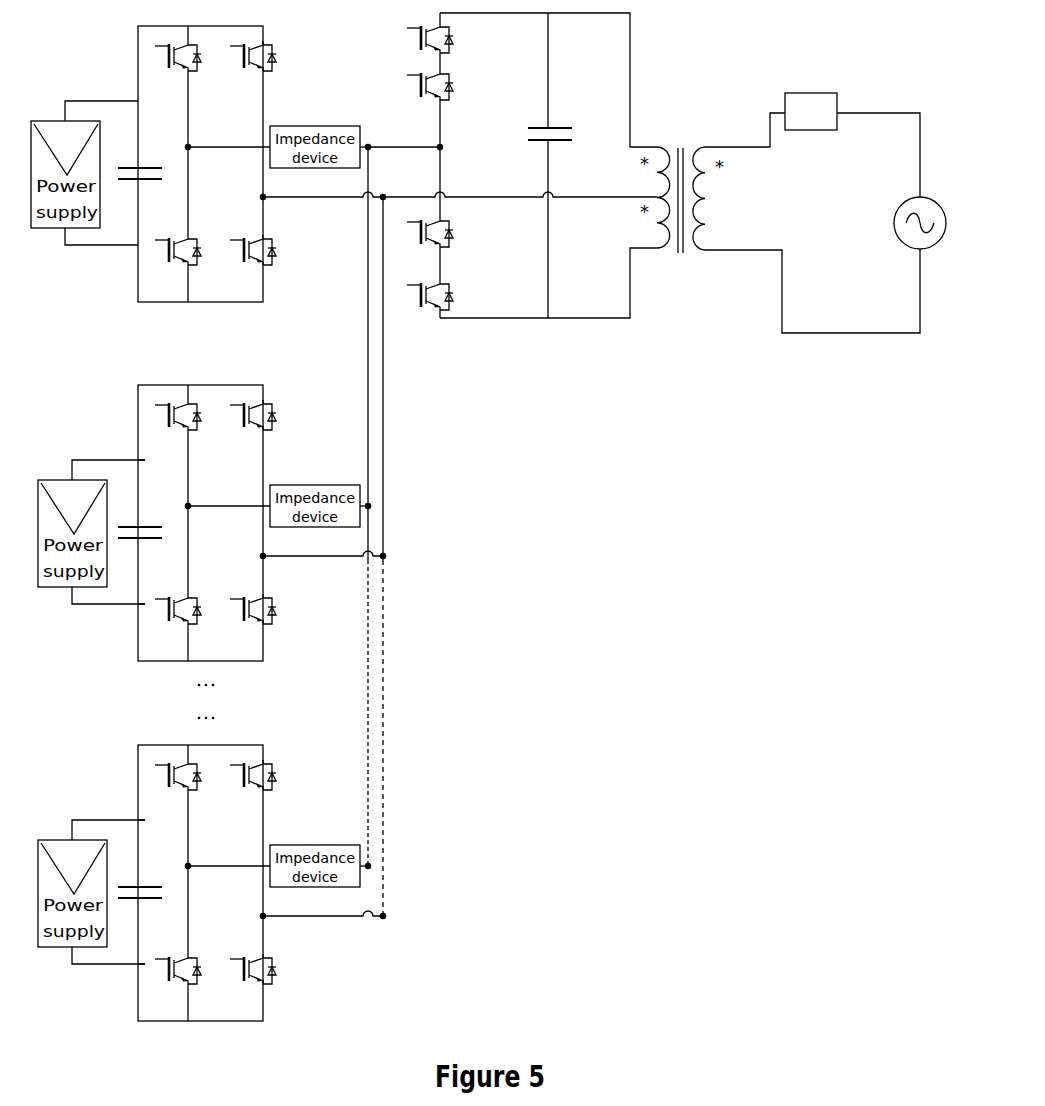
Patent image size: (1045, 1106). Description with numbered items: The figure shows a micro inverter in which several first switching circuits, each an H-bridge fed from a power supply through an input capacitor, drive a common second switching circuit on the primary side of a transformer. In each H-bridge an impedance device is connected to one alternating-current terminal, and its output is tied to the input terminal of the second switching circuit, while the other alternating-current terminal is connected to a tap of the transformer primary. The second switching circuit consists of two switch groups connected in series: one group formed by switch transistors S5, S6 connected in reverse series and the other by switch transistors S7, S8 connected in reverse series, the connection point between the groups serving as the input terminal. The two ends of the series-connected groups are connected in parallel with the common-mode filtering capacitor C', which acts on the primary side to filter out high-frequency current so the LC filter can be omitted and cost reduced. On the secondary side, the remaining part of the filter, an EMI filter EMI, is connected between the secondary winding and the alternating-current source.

The switch transistor S5 is at (442, 39).
The switch transistor S6 is at (442, 85).
The switch transistor S7 is at (442, 232).
The switch transistor S8 is at (442, 295).
The filtering capacitor C' is at (551, 165).
The EMI filter EMI is at (811, 111).